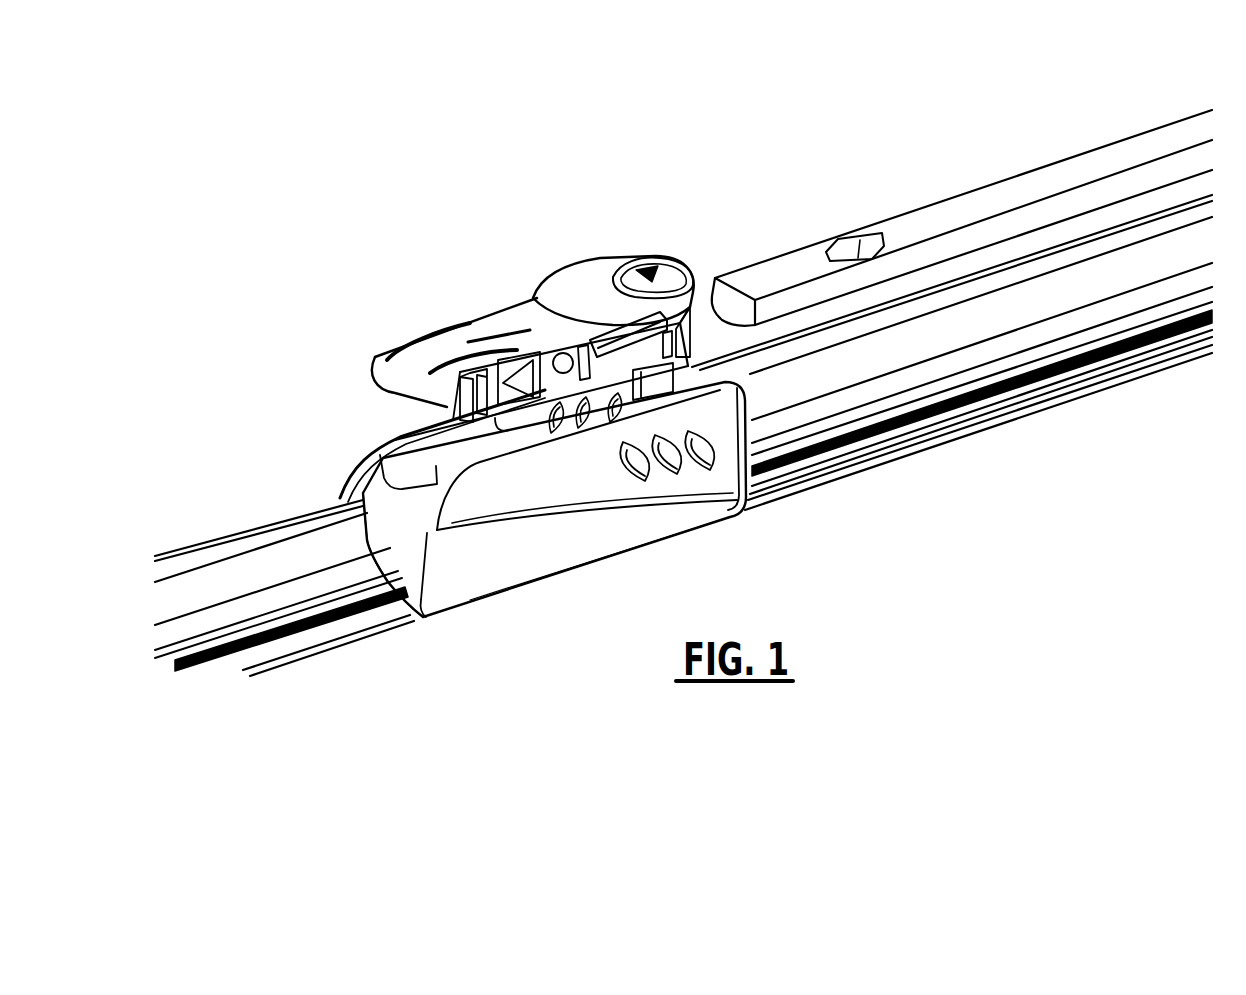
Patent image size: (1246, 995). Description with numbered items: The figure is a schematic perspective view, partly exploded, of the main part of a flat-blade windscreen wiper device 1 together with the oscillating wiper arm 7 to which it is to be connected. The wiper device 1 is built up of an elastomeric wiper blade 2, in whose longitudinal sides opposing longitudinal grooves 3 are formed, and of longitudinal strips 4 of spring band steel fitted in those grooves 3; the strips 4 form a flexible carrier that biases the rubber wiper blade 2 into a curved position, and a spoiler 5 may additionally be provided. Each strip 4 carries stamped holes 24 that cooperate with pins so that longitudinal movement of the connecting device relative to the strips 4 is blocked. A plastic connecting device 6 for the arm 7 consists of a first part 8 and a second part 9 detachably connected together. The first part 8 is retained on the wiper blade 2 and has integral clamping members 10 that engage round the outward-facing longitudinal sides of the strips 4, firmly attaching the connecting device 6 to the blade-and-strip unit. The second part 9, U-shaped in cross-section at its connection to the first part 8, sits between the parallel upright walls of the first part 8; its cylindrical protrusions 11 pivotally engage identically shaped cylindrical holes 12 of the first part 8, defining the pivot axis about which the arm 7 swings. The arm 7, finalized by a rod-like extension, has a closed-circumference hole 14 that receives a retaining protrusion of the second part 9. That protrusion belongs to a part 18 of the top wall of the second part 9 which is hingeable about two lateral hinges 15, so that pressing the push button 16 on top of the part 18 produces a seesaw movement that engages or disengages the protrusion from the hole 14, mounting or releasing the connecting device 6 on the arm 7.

The windscreen wiper device 1 is at (648, 187).
The wiper blade 2 is at (310, 657).
The longitudinal grooves 3 is at (187, 665).
The longitudinal strips 4 is at (857, 445).
The spoiler 5 is at (223, 537).
The connecting device 6 is at (552, 608).
The oscillating wiper arm 7 is at (1157, 138).
The first part 8 is at (693, 512).
The second part 9 is at (457, 312).
The clamping members 10 is at (407, 614).
The cylindrical protrusions 11 is at (538, 306).
The cylindrical holes 12 is at (380, 430).
The hole 14 is at (857, 238).
The lateral hinges 15 is at (698, 318).
The push button 16 is at (660, 262).
The part of the top wall 18 is at (587, 278).
The holes 24 is at (378, 385).